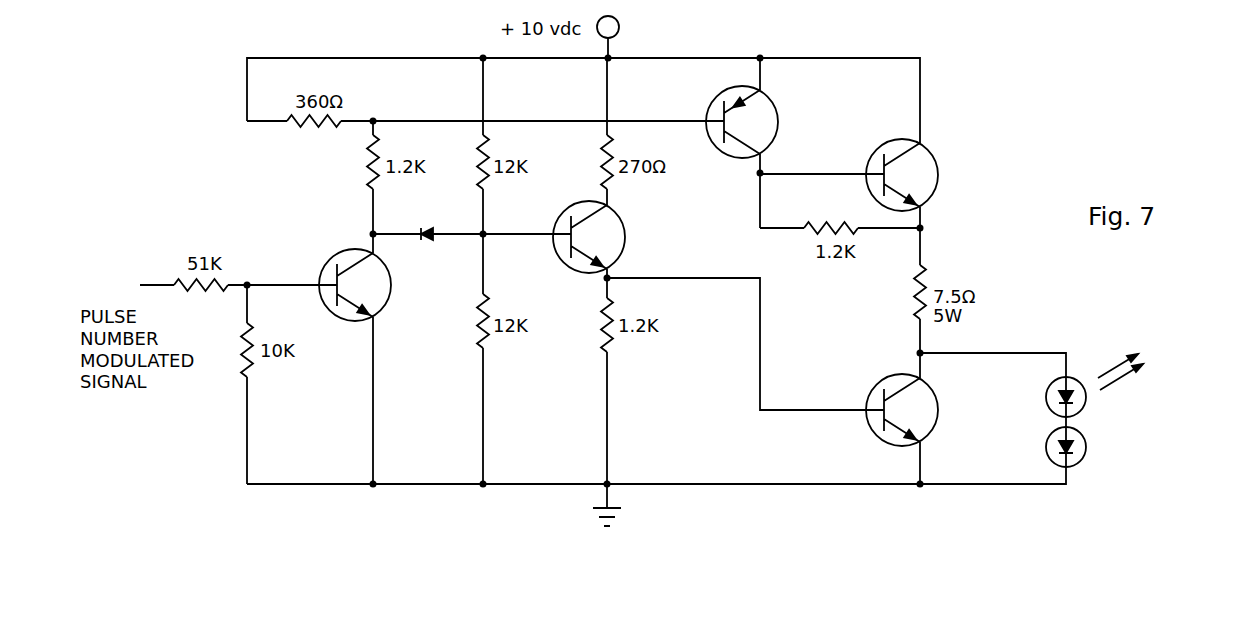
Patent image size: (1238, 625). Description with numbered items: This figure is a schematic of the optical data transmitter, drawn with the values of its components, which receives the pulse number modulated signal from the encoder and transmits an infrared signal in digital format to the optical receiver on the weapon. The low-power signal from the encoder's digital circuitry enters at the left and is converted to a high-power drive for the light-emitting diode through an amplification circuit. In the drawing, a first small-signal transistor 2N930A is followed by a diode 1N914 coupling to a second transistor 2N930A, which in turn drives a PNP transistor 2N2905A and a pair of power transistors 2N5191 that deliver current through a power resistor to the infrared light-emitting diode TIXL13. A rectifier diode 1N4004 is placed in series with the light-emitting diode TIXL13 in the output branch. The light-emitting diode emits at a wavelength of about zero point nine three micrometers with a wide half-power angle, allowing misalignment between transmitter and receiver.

The diode 1N914 is at (472, 218).
The NPN transistor 2N930A is at (511, 261).
The PNP transistor 2N2905A is at (788, 143).
The NPN power transistor 2N5191 is at (941, 292).
The infrared light emitting diode TIXL13 is at (1102, 390).
The rectifier diode 1N4004 is at (1101, 452).